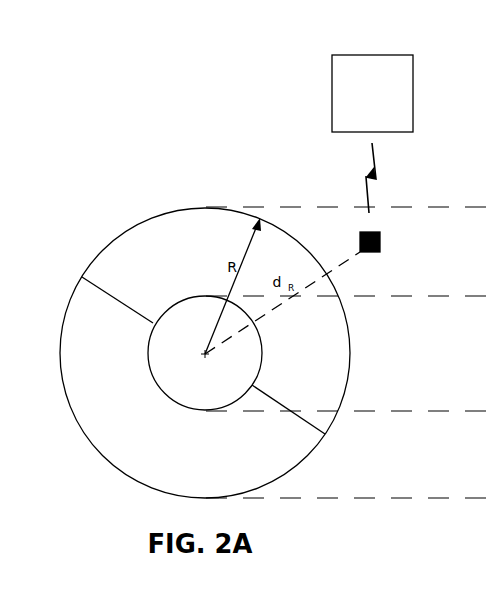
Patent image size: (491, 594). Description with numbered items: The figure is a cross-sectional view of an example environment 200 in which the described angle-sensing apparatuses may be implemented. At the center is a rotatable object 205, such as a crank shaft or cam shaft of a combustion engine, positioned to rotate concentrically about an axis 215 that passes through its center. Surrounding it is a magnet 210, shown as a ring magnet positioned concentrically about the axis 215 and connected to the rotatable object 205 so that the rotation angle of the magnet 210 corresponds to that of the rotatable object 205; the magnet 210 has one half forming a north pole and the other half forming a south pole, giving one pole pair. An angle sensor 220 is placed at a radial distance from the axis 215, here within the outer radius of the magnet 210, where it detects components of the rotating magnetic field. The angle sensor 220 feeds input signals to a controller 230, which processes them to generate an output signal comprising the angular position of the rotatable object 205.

The environment 200 is at (98, 26).
The rotatable object 205 is at (210, 448).
The magnet 210 is at (101, 226).
The axis 215 is at (173, 368).
The angle sensor 220 is at (401, 270).
The controller 230 is at (361, 110).